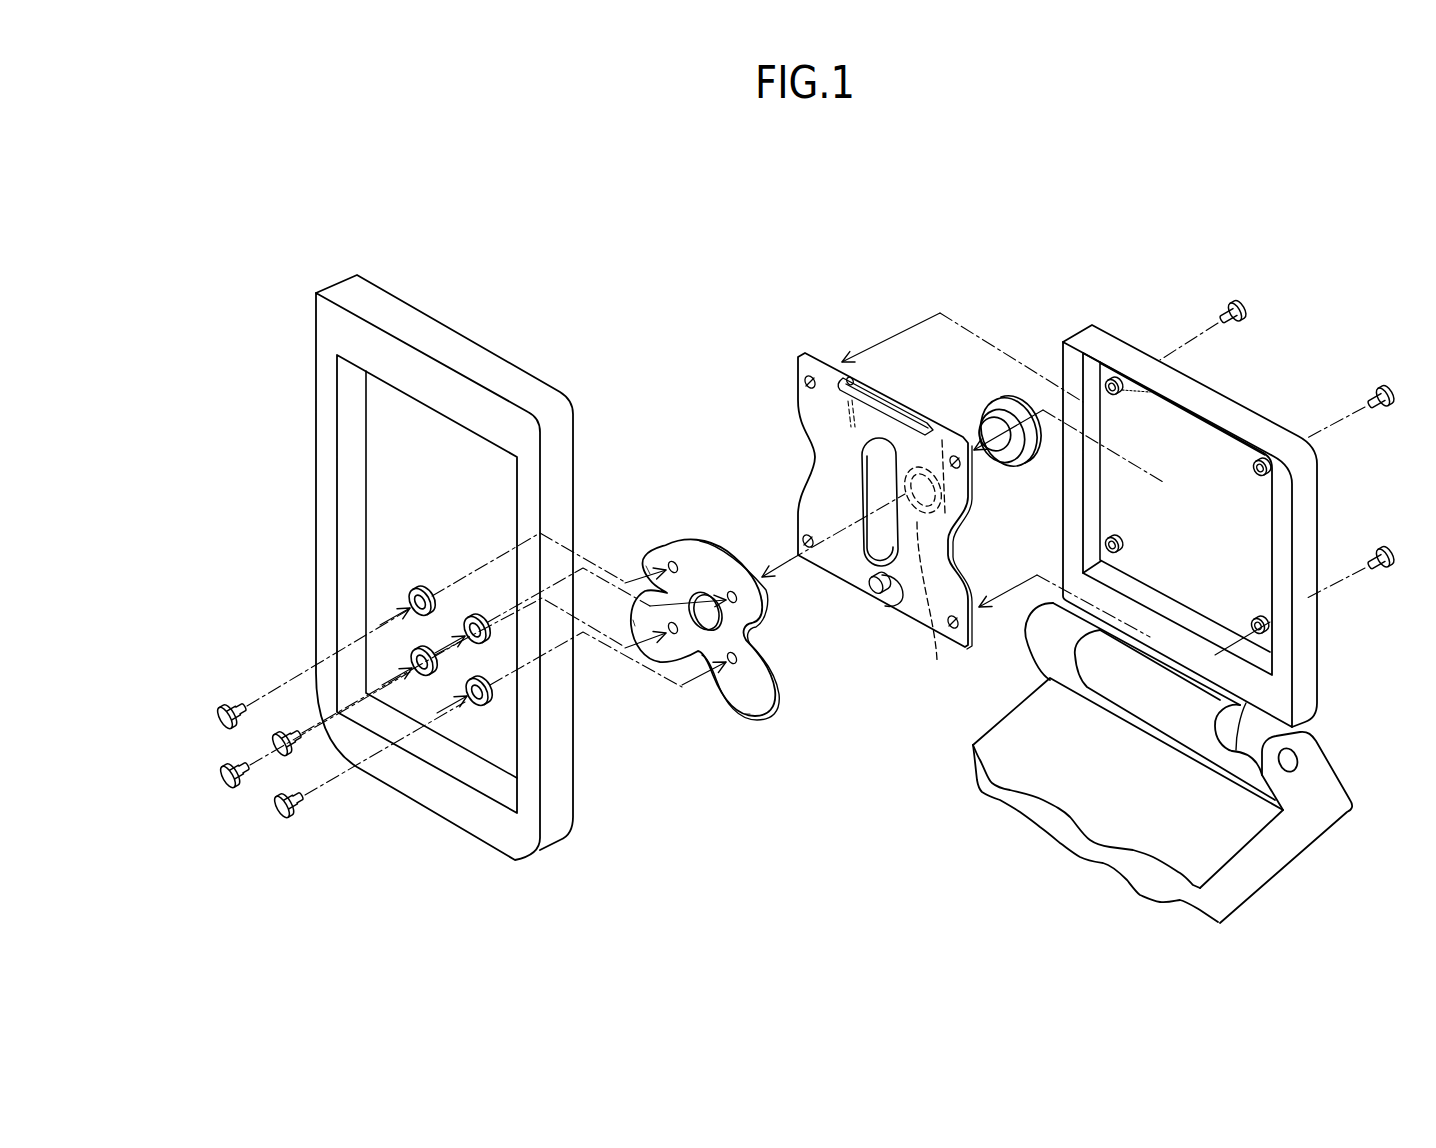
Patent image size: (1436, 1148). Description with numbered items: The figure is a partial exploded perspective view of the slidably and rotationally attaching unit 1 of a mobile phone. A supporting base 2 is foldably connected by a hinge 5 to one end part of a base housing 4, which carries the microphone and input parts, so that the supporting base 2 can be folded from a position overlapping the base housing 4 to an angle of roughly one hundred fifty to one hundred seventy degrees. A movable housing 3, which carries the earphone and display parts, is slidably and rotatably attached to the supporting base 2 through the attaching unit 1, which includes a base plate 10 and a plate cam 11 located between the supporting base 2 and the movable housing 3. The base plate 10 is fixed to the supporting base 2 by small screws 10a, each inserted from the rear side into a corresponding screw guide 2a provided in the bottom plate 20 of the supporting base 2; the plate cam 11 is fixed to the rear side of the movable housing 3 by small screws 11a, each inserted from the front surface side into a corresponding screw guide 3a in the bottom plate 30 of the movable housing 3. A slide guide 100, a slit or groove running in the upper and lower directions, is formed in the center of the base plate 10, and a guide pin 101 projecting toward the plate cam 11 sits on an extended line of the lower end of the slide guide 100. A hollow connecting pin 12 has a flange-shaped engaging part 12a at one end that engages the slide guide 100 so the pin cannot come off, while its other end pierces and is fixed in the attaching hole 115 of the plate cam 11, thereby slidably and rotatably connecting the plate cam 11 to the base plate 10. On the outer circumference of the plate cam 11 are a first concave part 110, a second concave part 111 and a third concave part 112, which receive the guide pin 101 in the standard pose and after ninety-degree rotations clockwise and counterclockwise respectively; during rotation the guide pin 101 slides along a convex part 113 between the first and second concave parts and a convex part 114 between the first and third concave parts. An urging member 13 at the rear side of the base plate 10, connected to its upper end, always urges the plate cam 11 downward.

The slidably and rotationally attaching unit 1 is at (760, 369).
The supporting base 2 is at (1236, 526).
The screw guide 2a is at (1122, 390).
The movable housing 3 is at (408, 572).
The screw guide 3a is at (470, 615).
The base housing 4 is at (1290, 833).
The hinge 5 is at (1068, 722).
The base plate 10 is at (842, 527).
The small screws 10a is at (1247, 312).
The plate cam 11 is at (718, 607).
The small screws 11a is at (270, 747).
The connecting pin 12 is at (1001, 367).
The engaging part 12a is at (996, 396).
The urging member 13 is at (939, 662).
The bottom plate 20 is at (1237, 517).
The bottom plate 30 is at (388, 433).
The slide guide 100 is at (905, 462).
The guide pin 101 is at (897, 610).
The first concave part 110 is at (699, 655).
The second concave part 111 is at (773, 677).
The third concave part 112 is at (685, 565).
The convex part 113 is at (746, 704).
The convex part 114 is at (662, 653).
The attaching hole 115 is at (712, 598).